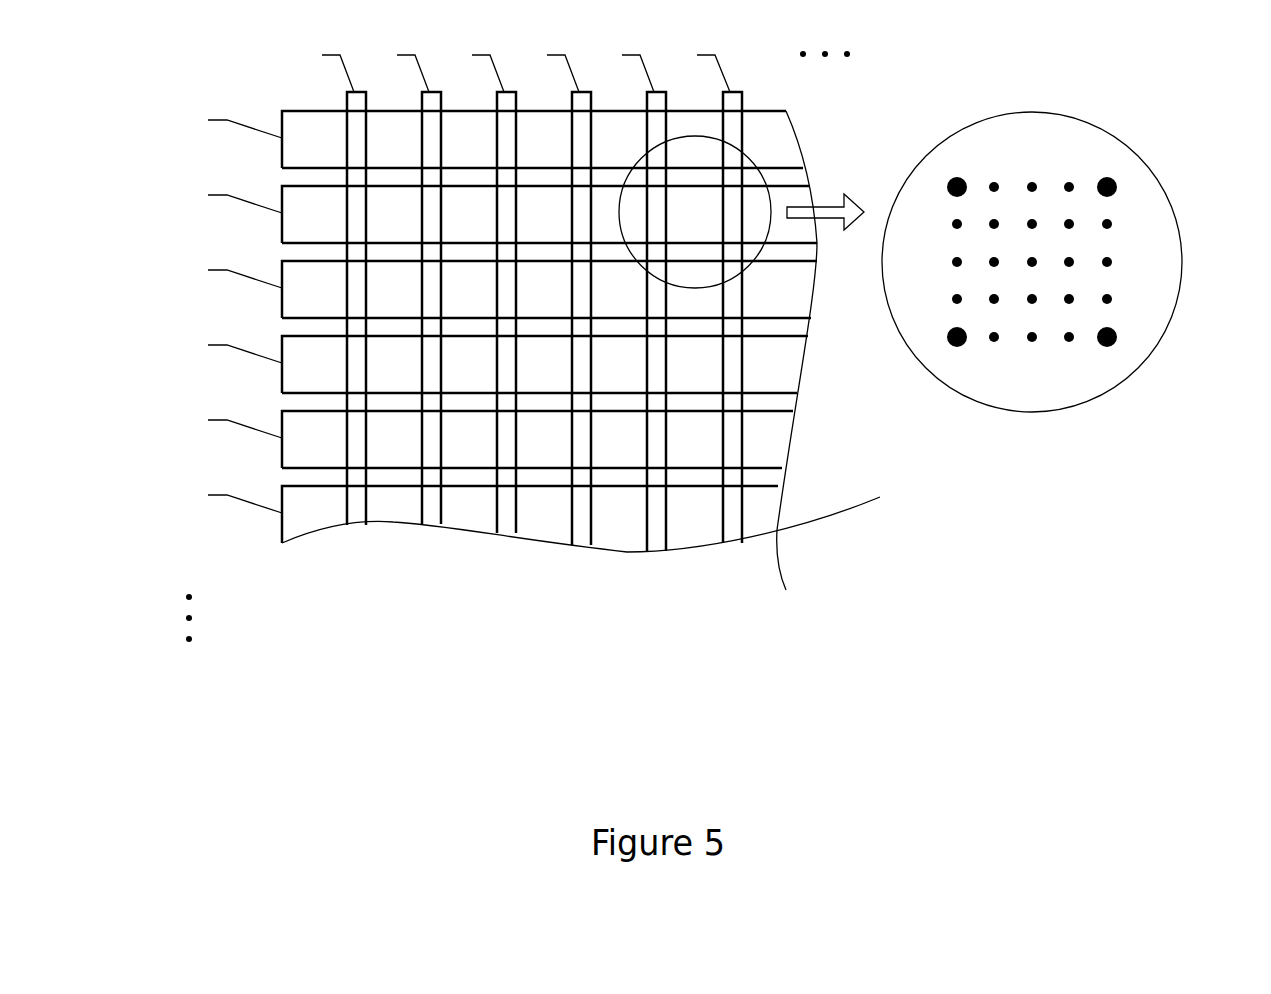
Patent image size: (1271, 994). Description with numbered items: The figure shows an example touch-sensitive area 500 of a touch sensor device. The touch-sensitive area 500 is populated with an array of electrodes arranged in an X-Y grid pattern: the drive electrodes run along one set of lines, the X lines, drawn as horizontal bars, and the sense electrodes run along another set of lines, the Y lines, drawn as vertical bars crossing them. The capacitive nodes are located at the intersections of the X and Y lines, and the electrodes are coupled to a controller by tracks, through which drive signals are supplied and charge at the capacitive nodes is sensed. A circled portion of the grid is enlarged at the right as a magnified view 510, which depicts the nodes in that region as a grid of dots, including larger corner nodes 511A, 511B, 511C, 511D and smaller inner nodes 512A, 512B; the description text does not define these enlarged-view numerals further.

The touch-sensitive area 500 is at (807, 675).
The magnified view of touch sensor region 510 is at (1042, 289).
The corner sensing element 511A is at (952, 177).
The corner sensing element 511B is at (1112, 177).
The corner sensing element 511C is at (952, 345).
The corner sensing element 511D is at (1112, 345).
The sensing element 512A is at (1033, 180).
The sensing element 512B is at (1032, 305).